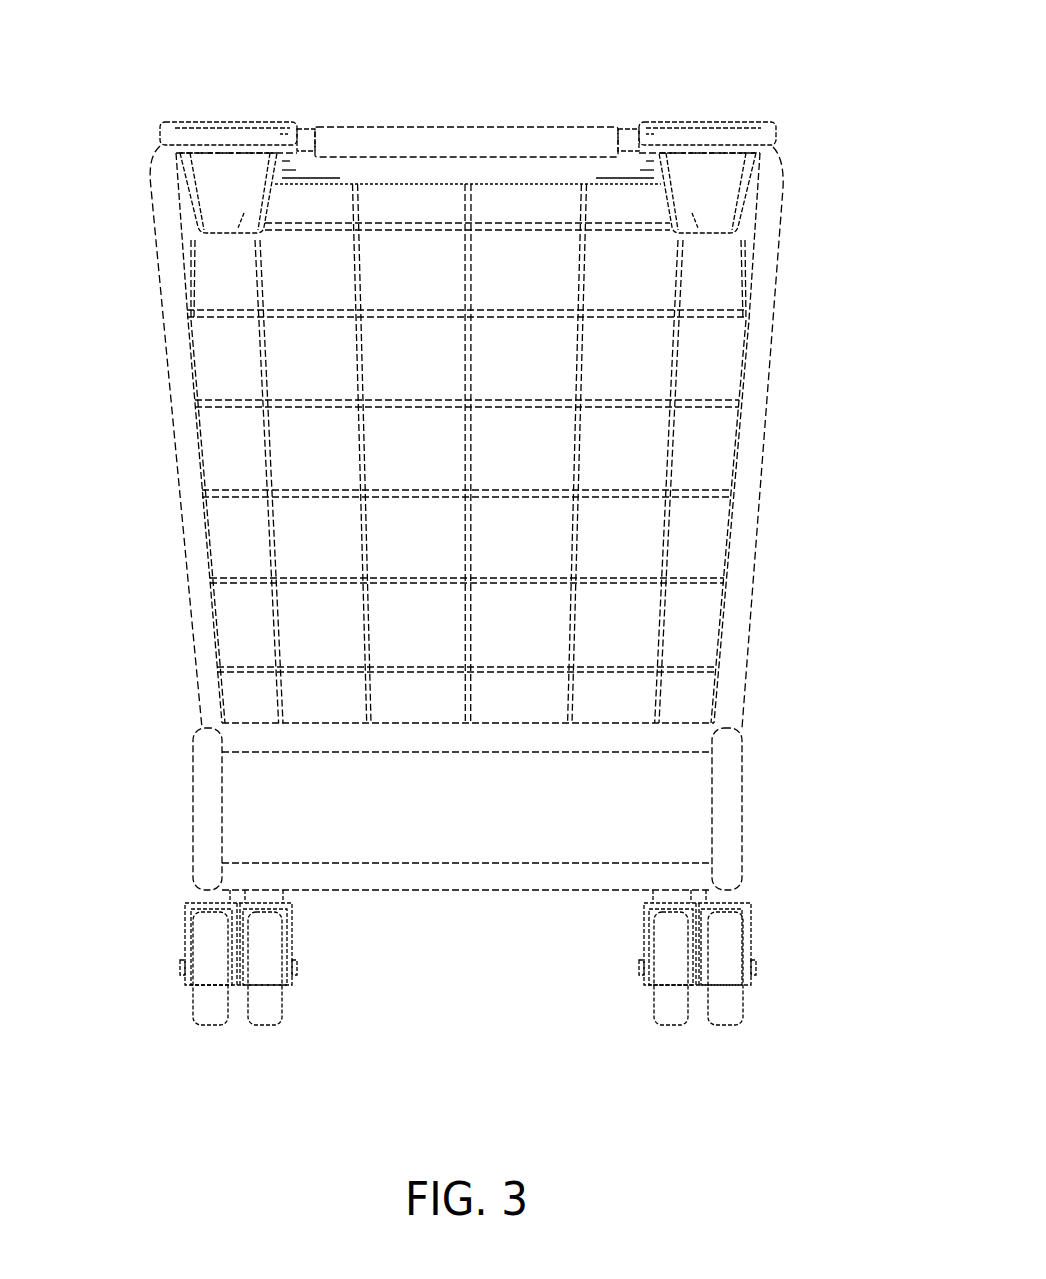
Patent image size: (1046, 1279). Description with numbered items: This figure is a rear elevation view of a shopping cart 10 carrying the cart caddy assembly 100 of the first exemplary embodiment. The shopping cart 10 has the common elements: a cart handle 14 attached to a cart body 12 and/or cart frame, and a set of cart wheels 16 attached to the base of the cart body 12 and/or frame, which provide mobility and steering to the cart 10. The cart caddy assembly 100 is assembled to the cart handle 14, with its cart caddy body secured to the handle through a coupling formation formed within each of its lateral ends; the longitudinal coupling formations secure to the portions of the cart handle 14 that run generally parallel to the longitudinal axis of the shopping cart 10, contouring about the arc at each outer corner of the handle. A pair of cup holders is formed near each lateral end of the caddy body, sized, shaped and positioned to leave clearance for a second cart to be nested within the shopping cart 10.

The cart caddy assembly 100 is at (476, 158).
The cart handle 14 is at (306, 125).
The cart body 12 is at (765, 432).
The shopping cart 10 is at (135, 661).
The cart wheels 16 is at (743, 1000).